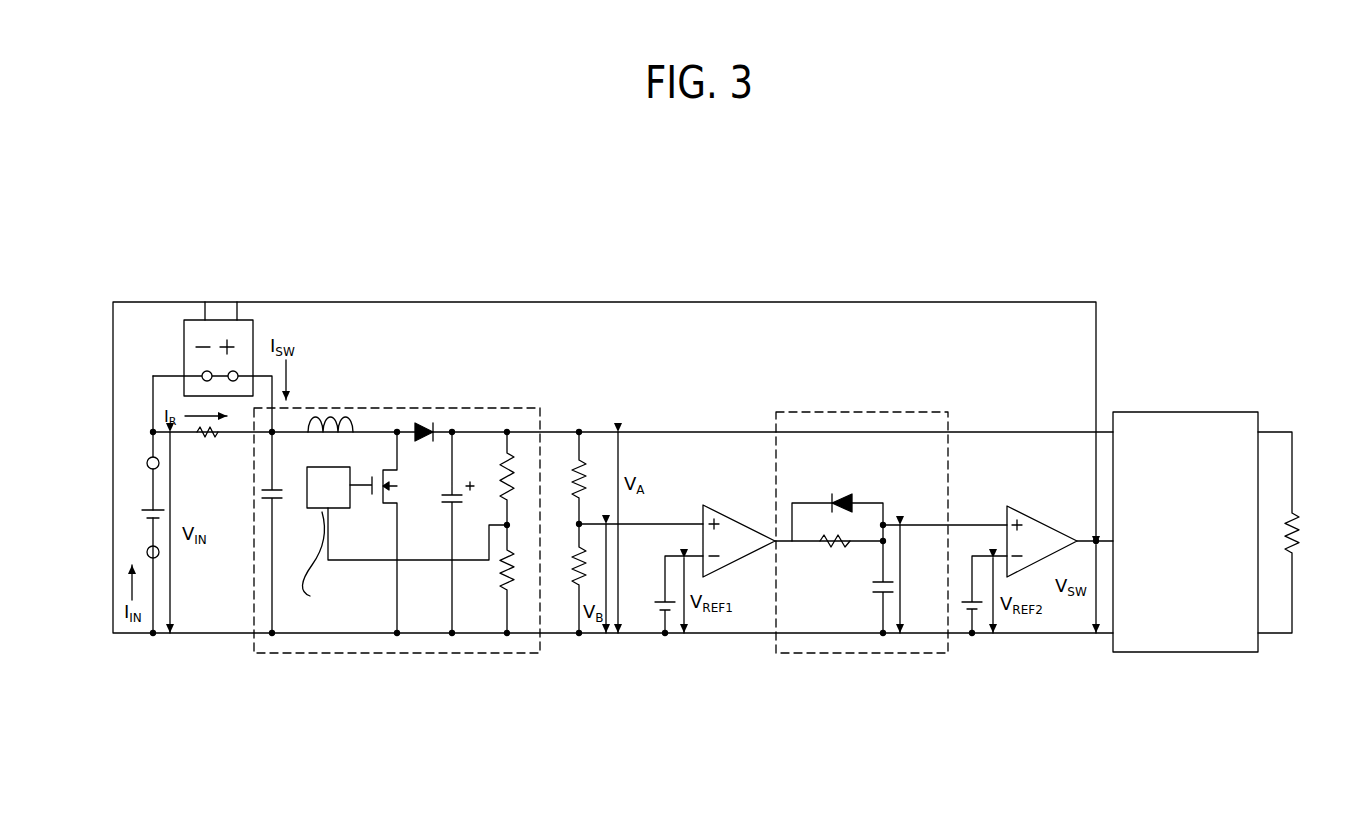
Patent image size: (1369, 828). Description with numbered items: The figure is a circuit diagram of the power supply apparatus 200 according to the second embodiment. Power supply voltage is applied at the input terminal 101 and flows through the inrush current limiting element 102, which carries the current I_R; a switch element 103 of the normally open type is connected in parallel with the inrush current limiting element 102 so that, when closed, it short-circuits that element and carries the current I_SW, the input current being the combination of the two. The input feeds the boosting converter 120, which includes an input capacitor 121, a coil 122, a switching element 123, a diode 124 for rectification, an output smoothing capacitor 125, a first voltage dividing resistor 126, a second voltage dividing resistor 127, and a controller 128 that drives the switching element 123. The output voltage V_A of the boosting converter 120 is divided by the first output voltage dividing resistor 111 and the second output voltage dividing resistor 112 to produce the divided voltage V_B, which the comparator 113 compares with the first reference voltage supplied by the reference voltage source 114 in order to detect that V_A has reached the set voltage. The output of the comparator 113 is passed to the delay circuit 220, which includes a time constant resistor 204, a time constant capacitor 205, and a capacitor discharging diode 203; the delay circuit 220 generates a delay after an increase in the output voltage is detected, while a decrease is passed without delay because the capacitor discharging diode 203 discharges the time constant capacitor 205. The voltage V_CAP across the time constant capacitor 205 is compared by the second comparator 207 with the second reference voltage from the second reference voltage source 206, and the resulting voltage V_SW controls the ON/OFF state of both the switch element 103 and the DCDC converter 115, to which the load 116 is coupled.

The input terminal 101 is at (148, 461).
The inrush current limiting element 102 is at (213, 436).
The switch element 103 is at (216, 318).
The first output voltage dividing resistor 111 is at (578, 496).
The second output voltage dividing resistor 112 is at (578, 585).
The comparator 113 is at (724, 510).
The reference voltage source 114 is at (658, 600).
The DCDC converter 115 is at (1155, 641).
The load 116 is at (1298, 520).
The boosting converter 120 is at (506, 407).
The input capacitor 121 is at (277, 501).
The coil 122 is at (318, 438).
The switching element 123 is at (382, 473).
The diode for rectification 124 is at (424, 442).
The output smoothing capacitor 125 is at (450, 506).
The first voltage dividing resistor 126 is at (504, 464).
The second voltage dividing resistor 127 is at (500, 590).
The controller 128 is at (395, 548).
The power supply apparatus 200 is at (1185, 481).
The capacitor discharging diode 203 is at (854, 498).
The time constant resistor 204 is at (828, 553).
The time constant capacitor 205 is at (880, 595).
The second reference voltage source 206 is at (970, 596).
The second comparator 207 is at (1030, 510).
The delay circuit 220 is at (910, 410).